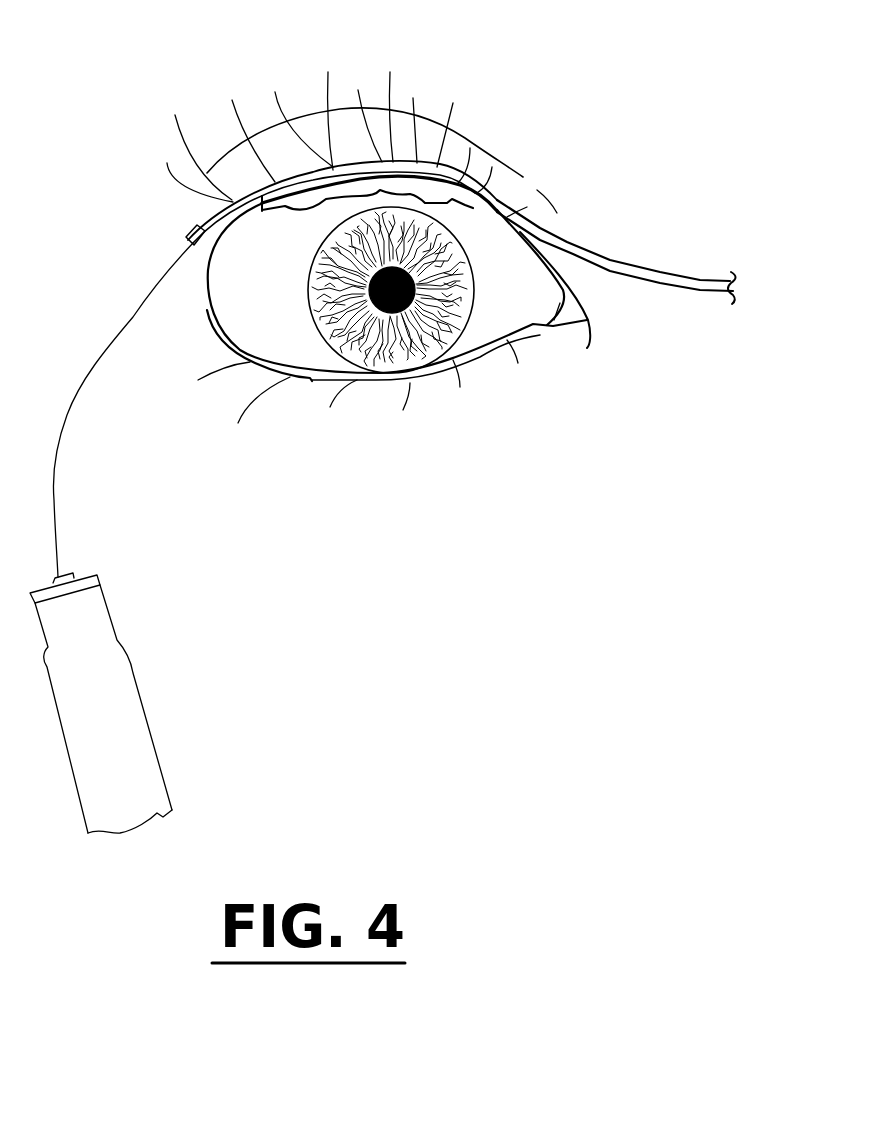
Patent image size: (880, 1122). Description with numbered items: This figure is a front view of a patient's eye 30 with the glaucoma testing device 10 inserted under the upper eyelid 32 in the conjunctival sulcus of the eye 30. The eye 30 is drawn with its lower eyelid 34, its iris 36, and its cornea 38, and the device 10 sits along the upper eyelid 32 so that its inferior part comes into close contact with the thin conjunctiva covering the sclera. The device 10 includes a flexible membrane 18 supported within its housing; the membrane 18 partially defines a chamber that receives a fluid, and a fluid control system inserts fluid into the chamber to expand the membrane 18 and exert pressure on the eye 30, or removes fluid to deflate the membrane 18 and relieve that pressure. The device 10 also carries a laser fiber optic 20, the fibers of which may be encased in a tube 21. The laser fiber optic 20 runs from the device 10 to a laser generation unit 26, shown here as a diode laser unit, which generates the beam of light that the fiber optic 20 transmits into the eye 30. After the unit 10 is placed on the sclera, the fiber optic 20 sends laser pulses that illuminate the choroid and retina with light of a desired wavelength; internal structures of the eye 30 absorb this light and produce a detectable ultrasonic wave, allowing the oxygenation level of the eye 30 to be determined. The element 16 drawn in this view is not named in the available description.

The glaucoma testing device 10 is at (411, 170).
The strap 16 is at (700, 280).
The flexible membrane 18 is at (298, 205).
The laser fiber optic 20 is at (147, 297).
The tube 21 is at (192, 247).
The laser generation unit 26 is at (133, 673).
The eye 30 is at (519, 293).
The upper eyelid 32 is at (433, 177).
The lower eyelid 34 is at (310, 380).
The iris 36 is at (382, 347).
The cornea 38 is at (496, 341).